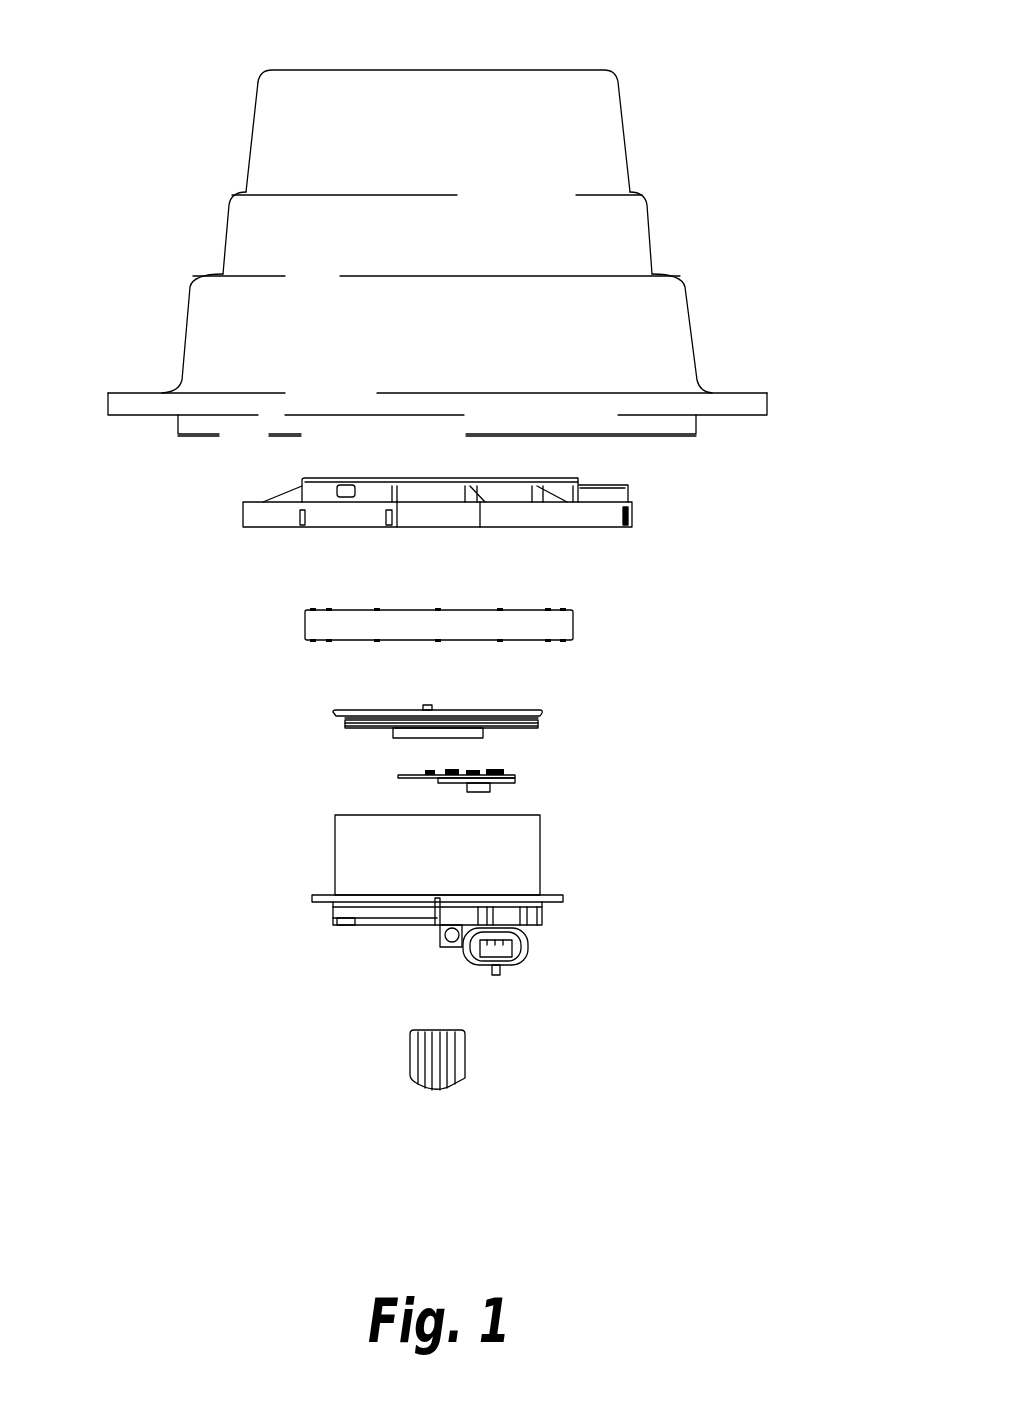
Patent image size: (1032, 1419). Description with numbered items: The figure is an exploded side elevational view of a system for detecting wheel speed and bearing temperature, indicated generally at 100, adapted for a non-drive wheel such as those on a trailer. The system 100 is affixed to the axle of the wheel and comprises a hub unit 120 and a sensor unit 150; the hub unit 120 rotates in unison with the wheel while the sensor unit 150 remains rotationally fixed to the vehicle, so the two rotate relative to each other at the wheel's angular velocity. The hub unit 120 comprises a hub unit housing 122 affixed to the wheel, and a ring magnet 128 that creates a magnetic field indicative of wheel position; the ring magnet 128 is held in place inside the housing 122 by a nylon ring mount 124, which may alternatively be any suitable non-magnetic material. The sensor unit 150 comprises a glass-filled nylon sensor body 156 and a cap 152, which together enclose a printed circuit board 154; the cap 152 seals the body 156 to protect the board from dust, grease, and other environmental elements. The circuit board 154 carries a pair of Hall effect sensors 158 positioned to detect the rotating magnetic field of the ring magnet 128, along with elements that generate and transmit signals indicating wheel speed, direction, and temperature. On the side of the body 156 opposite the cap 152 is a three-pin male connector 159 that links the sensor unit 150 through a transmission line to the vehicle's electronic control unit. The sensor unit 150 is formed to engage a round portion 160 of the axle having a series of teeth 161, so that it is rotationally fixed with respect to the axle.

The system for detecting wheel speed and bearing temperature 100 is at (156, 146).
The hub unit 120 is at (792, 63).
The hub unit housing 122 is at (640, 225).
The ring mount 124 is at (632, 512).
The ring magnet 128 is at (573, 628).
The sensor unit 150 is at (792, 727).
The cap 152 is at (540, 722).
The circuit board 154 is at (515, 780).
The sensor body 156 is at (540, 876).
The Hall effect sensors 158 is at (468, 792).
The connector 159 is at (528, 960).
The round portion of the axle 160 is at (465, 1040).
The teeth 161 is at (437, 1045).